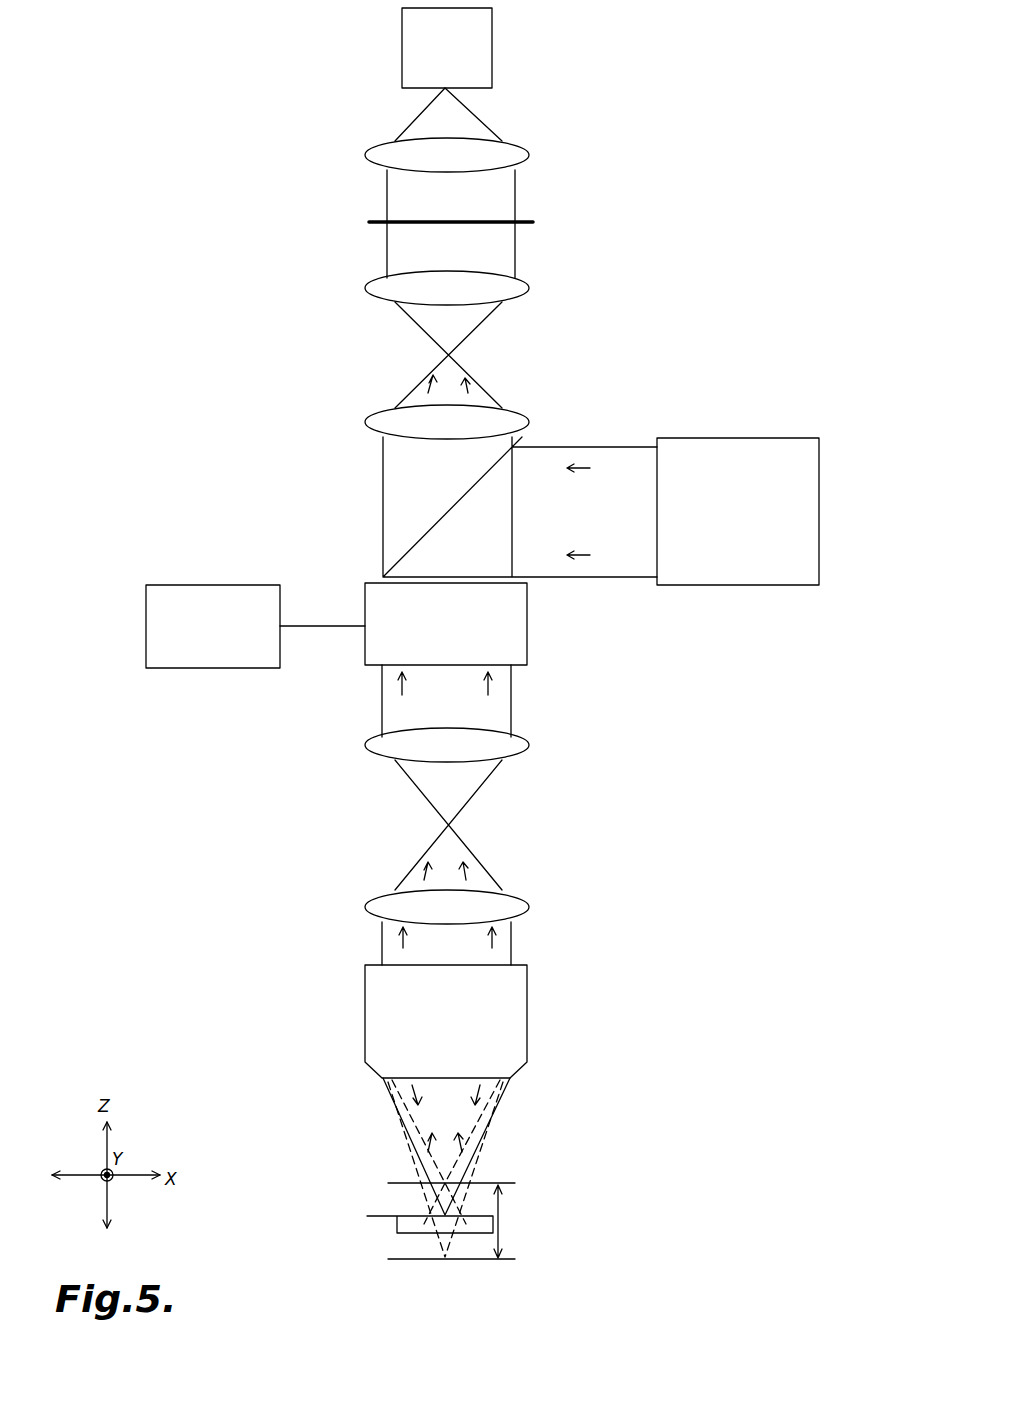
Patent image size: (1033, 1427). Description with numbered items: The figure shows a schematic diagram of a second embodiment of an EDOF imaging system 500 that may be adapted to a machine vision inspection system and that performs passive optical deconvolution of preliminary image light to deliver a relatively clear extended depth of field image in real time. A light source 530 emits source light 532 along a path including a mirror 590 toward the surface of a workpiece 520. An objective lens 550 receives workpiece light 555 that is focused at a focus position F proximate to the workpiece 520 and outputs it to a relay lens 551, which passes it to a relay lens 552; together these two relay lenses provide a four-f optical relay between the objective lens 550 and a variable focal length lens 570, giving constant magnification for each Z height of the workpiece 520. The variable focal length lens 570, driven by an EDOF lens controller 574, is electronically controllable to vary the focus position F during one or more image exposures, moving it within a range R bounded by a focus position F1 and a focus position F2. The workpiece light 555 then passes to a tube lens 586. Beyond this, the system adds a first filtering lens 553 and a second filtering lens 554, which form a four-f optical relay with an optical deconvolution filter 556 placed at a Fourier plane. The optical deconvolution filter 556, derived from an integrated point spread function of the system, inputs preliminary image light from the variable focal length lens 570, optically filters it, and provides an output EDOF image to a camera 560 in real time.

The EDOF imaging system 500 is at (759, 61).
The camera 560 is at (494, 45).
The second filtering lens 554 is at (530, 152).
The optical deconvolution filter 556 is at (535, 222).
The first filtering lens 553 is at (530, 290).
The tube lens 586 is at (365, 422).
The mirror 590 is at (393, 553).
The light source 530 is at (750, 585).
The source light 532 is at (583, 553).
The variable focal length lens 570 is at (529, 610).
The EDOF lens controller 574 is at (178, 668).
The relay lens 552 is at (530, 742).
The relay lens 551 is at (530, 905).
The objective lens 550 is at (528, 1007).
The workpiece light 555 is at (431, 393).
The workpiece 520 is at (397, 1228).
The focus position F is at (380, 1216).
The focus position F1 is at (497, 1183).
The focus position F2 is at (507, 1259).
The range R is at (498, 1205).